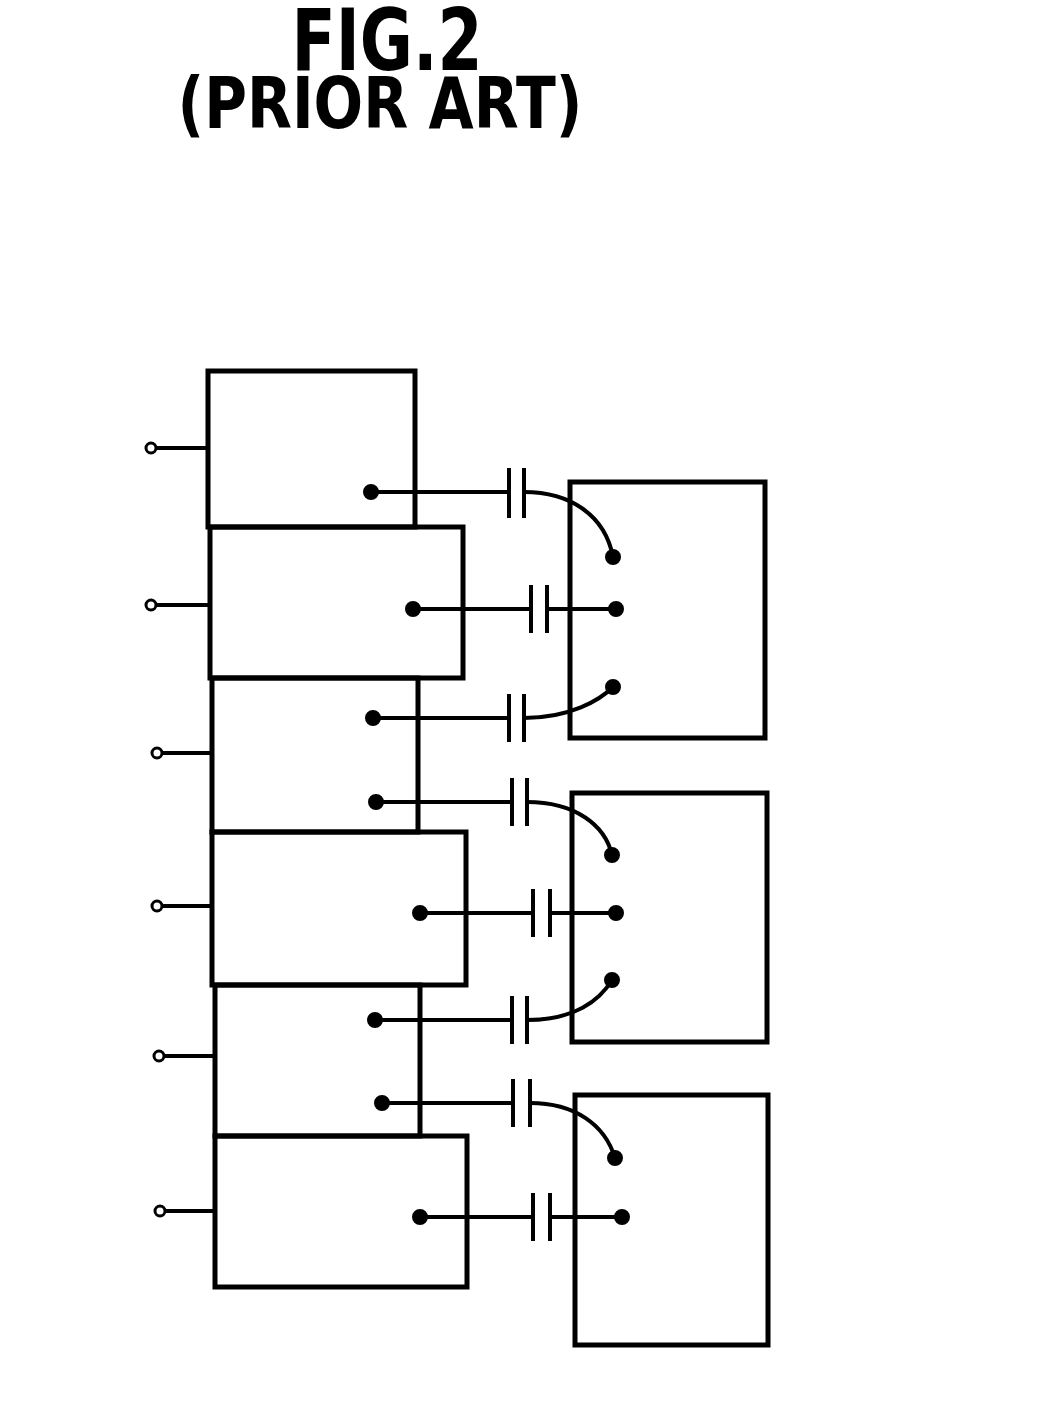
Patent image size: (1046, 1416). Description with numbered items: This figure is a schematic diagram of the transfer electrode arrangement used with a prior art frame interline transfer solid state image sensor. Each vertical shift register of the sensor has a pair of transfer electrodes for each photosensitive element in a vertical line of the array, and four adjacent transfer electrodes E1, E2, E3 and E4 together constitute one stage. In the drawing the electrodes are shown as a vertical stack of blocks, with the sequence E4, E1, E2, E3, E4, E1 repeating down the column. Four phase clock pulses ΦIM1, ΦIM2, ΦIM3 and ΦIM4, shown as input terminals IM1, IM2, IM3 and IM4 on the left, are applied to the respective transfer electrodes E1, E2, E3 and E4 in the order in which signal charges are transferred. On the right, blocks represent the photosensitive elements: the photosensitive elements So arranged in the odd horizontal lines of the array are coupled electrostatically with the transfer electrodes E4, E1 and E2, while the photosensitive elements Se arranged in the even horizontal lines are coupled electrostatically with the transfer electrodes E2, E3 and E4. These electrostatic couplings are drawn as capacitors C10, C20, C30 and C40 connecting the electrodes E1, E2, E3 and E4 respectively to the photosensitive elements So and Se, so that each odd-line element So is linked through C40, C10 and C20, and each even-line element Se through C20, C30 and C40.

The transfer electrode E1 is at (218, 560).
The transfer electrode E2 is at (225, 712).
The transfer electrode E3 is at (225, 862).
The transfer electrode E4 is at (223, 398).
The coupling capacitance C10 is at (517, 891).
The coupling capacitance C20 is at (493, 759).
The coupling capacitance C30 is at (518, 893).
The coupling capacitance C40 is at (493, 796).
The photosensitive elements arranged in the odd horizontal lines So is at (737, 603).
The photosensitive elements arranged in the even horizontal lines Se is at (742, 902).
The clock pulse Φ IM1 is at (124, 907).
The clock pulse Φ IM2 is at (122, 752).
The clock pulse Φ IM3 is at (122, 905).
The clock pulse Φ IM4 is at (124, 751).